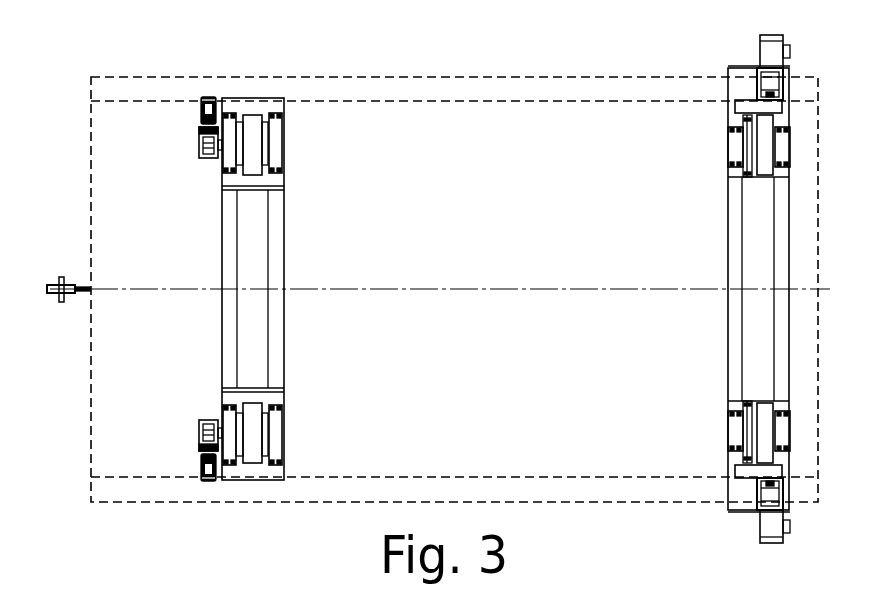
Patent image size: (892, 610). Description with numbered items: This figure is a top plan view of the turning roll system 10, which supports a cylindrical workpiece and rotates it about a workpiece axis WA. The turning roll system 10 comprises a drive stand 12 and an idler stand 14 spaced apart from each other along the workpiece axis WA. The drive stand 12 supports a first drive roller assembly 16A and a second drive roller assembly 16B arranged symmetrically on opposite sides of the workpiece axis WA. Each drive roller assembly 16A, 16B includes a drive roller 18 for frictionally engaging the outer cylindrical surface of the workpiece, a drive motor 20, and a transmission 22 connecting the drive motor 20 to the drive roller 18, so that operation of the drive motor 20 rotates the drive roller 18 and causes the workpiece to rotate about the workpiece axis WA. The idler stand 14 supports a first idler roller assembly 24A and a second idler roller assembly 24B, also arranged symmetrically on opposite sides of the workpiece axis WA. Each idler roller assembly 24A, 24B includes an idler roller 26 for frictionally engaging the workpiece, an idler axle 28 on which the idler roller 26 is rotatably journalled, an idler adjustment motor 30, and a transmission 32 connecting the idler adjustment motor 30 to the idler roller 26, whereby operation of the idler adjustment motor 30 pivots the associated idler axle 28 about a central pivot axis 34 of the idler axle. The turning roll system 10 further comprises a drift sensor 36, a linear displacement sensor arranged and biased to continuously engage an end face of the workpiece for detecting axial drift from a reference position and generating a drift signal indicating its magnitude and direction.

The turning roll system 10 is at (341, 38).
The workpiece axis WA is at (458, 77).
The drive stand 12 is at (727, 345).
The idler stand 14 is at (285, 268).
The first drive roller assembly 16A is at (733, 512).
The second drive roller assembly 16B is at (733, 66).
The drive roller 18 is at (766, 178).
The drive motor 20 is at (760, 50).
The transmission 22 is at (738, 107).
The first idler roller assembly 24A is at (300, 452).
The second idler roller assembly 24B is at (300, 126).
The idler roller 26 is at (255, 178).
The idler axle 28 is at (238, 177).
The idler adjustment motor 30 is at (203, 108).
The transmission 32 is at (205, 155).
The central pivot axis 34 is at (278, 150).
The drift sensor 36 is at (87, 285).